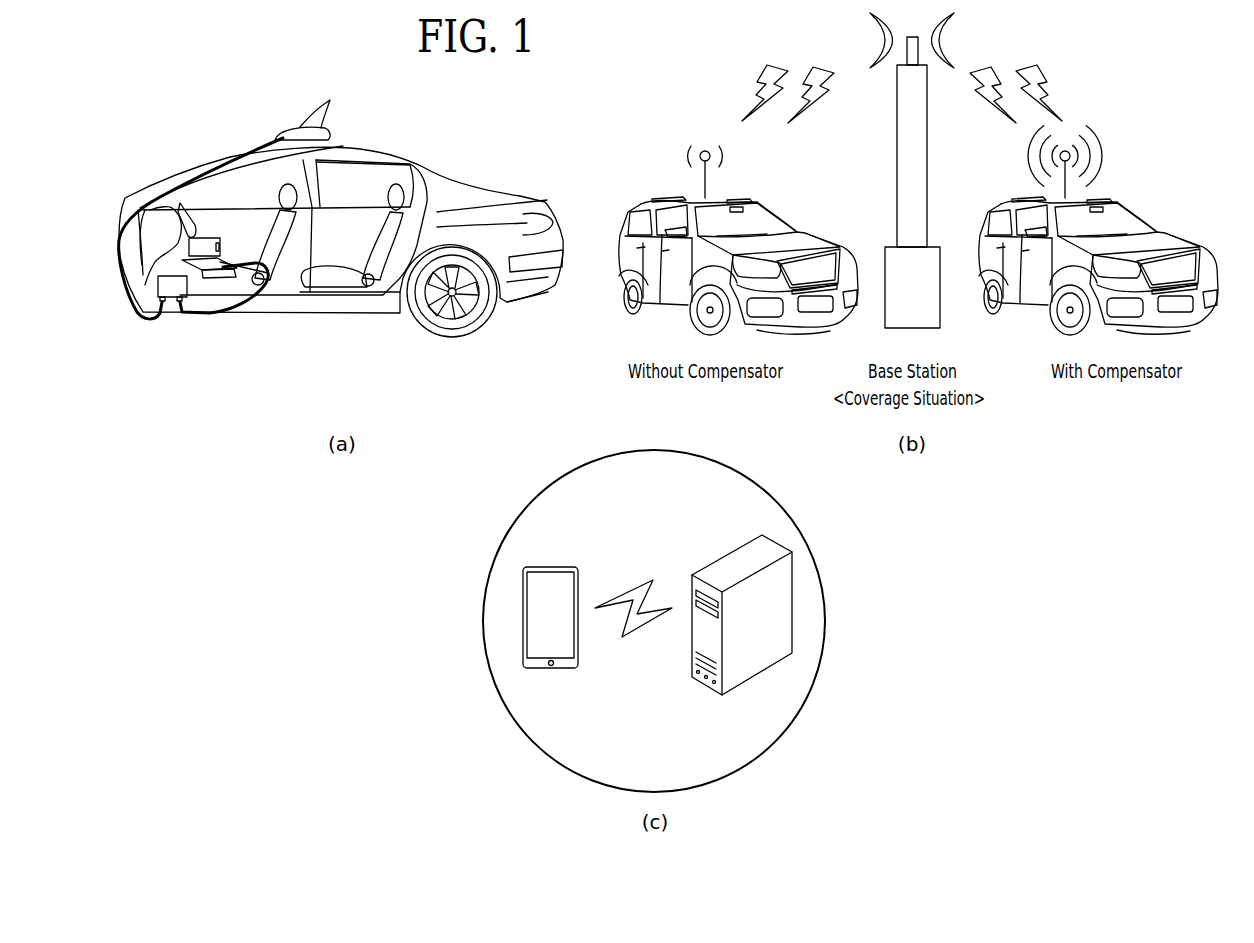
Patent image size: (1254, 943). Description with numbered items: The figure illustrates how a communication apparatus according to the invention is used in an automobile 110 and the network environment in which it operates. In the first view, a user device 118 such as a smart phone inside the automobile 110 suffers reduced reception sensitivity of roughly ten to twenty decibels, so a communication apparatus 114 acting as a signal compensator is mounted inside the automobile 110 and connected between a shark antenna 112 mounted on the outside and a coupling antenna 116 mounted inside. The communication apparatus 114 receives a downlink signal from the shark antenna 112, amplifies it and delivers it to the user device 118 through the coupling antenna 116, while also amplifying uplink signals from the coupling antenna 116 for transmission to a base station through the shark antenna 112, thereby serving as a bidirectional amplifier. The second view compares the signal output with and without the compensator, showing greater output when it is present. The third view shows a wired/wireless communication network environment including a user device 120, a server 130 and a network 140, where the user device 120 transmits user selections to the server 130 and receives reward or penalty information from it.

The automobile 110 is at (470, 180).
The shark antenna 112 is at (296, 120).
The communication apparatus 114 is at (172, 290).
The coupling antenna 116 is at (217, 273).
The user device 118 is at (207, 237).
The user device 120 is at (523, 595).
The server 130 is at (785, 610).
The network 140 is at (637, 582).